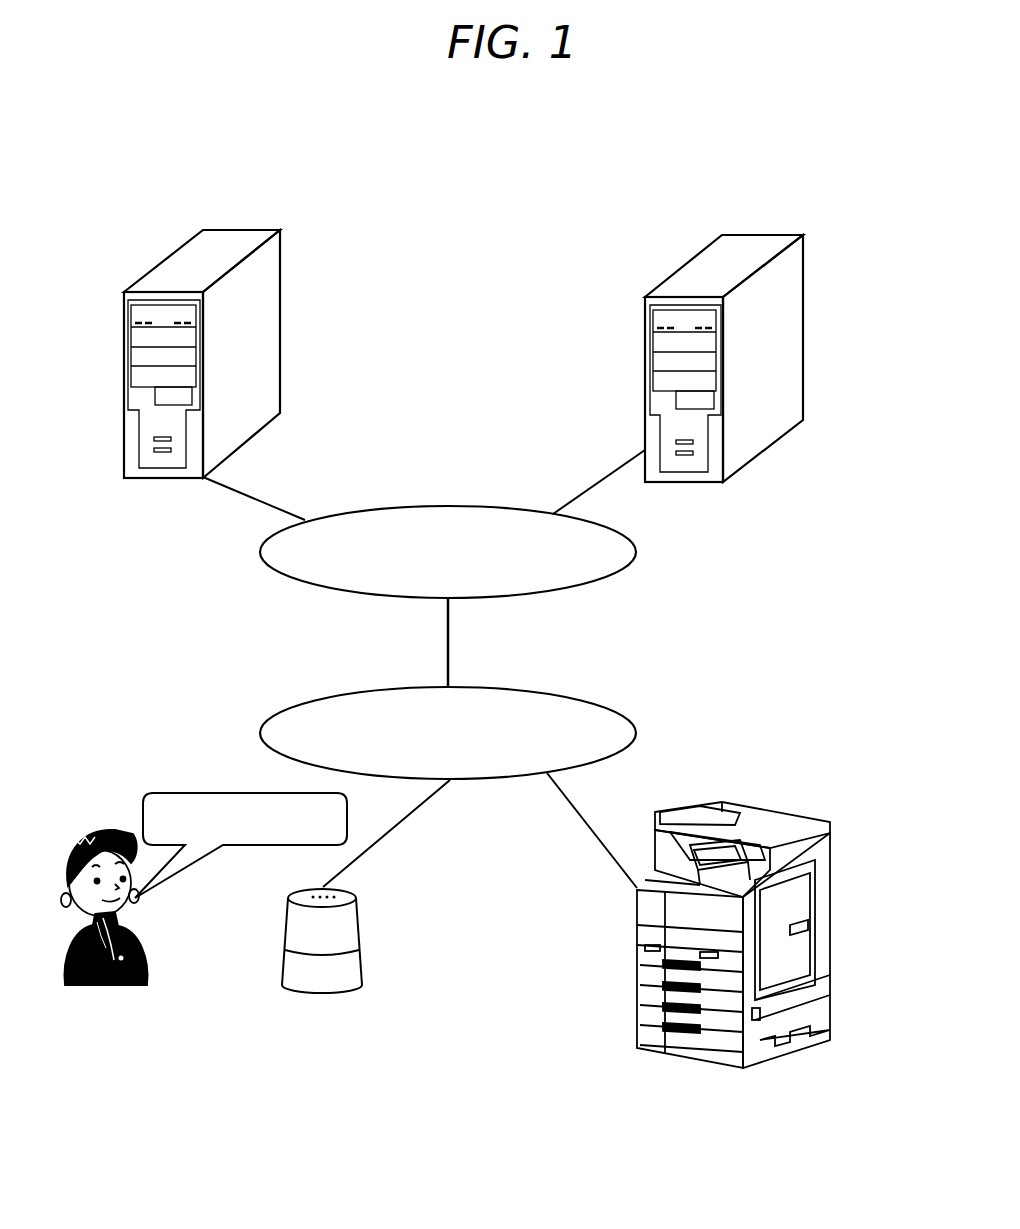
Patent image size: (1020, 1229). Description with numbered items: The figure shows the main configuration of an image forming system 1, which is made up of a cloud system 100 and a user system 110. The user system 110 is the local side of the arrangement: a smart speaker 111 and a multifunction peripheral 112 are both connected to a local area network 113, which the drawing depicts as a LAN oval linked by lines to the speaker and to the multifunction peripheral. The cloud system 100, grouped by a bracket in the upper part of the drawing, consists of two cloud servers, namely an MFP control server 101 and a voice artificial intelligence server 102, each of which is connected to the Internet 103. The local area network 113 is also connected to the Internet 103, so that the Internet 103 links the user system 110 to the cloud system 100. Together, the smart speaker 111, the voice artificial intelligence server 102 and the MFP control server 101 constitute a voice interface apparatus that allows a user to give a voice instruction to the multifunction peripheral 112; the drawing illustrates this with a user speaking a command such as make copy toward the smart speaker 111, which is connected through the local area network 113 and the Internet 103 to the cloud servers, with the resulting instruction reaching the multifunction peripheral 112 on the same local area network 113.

The image forming system 1 is at (458, 166).
The cloud system 100 is at (882, 193).
The MFP control server 101 is at (773, 445).
The voice artificial intelligence (AI) server 102 is at (163, 480).
The Internet 103 is at (585, 586).
The user system 110 is at (882, 690).
The smart speaker (SS) 111 is at (365, 906).
The multifunction peripheral (MFP) 112 is at (770, 808).
The local area network (LAN) 113 is at (330, 697).